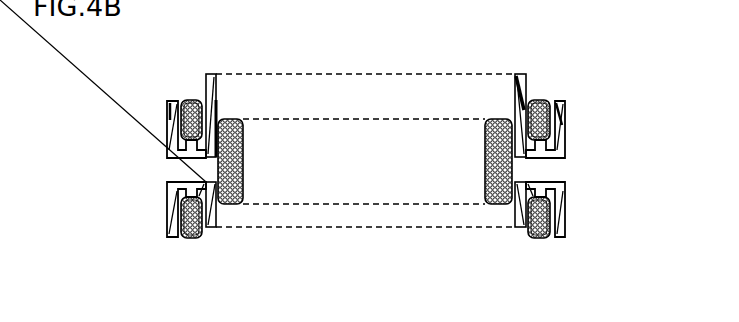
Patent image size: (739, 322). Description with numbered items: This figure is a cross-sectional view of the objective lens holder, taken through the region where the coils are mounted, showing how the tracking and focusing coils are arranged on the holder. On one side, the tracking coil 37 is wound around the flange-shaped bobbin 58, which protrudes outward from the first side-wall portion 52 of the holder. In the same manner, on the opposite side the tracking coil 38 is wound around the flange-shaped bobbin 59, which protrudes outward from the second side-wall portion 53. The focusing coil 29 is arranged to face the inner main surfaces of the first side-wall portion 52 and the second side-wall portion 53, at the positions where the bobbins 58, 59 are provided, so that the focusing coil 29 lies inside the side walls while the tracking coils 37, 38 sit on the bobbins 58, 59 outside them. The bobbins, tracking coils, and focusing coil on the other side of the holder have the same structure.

The focusing coil 29 is at (240, 118).
The first side-wall portion 52 is at (518, 73).
The second side-wall portion 53 is at (207, 73).
The tracking coil 37 is at (193, 240).
The tracking coil 38 is at (538, 240).
The bobbin 58 is at (172, 240).
The bobbin 59 is at (556, 240).